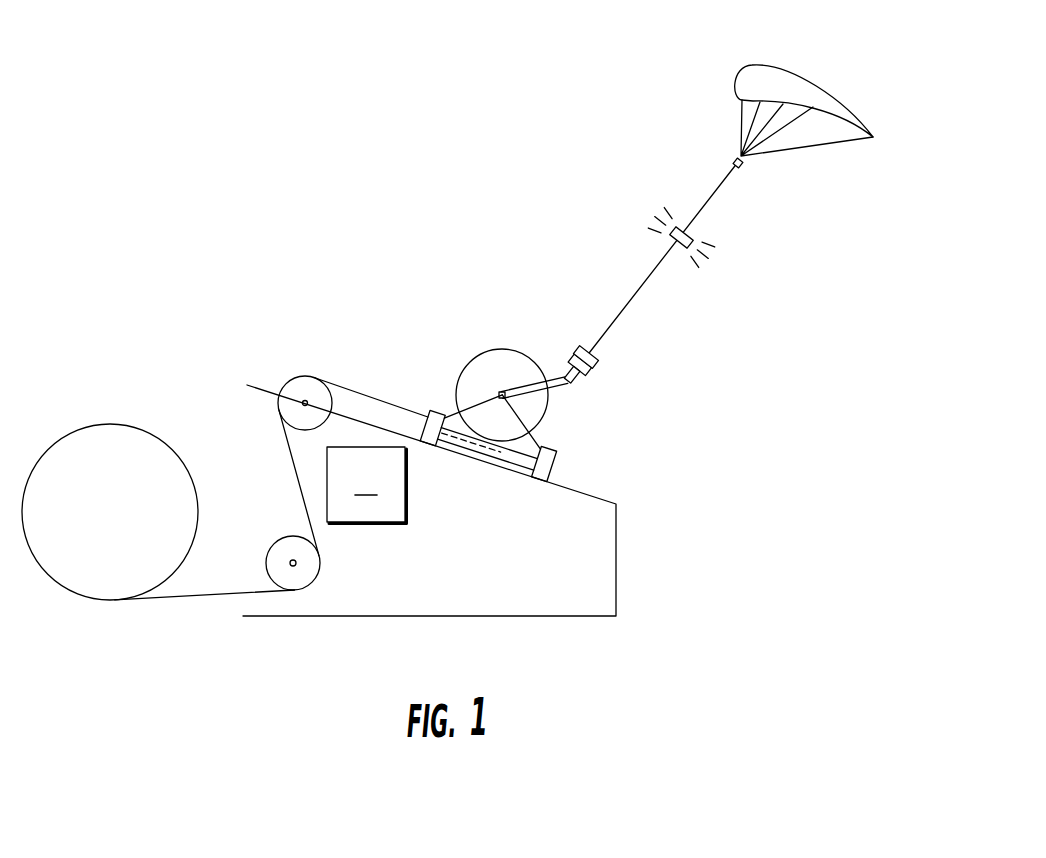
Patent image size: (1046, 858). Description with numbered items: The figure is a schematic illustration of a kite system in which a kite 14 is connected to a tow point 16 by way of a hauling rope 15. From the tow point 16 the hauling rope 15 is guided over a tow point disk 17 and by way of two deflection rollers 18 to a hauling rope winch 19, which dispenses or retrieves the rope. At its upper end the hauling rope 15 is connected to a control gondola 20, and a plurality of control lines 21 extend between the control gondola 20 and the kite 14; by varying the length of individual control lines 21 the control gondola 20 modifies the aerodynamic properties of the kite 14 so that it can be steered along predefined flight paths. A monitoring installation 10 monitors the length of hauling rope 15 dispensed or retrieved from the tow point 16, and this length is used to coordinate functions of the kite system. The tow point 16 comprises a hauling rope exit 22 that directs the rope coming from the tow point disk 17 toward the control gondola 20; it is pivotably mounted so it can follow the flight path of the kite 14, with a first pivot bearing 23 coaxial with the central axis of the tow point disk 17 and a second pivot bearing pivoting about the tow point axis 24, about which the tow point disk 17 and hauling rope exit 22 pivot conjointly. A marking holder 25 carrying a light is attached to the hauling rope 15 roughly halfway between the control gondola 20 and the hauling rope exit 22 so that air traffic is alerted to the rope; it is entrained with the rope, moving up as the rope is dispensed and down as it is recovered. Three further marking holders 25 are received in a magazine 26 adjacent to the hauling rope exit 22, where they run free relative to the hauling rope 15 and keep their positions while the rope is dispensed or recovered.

The monitoring installation 10 is at (367, 485).
The kite 14 is at (780, 63).
The hauling rope 15 is at (629, 298).
The tow point 16 is at (472, 306).
The tow point disk 17 is at (466, 366).
The deflection rollers 18 is at (302, 385).
The hauling rope winch 19 is at (101, 582).
The control gondola 20 is at (737, 157).
The control lines 21 is at (797, 153).
The hauling rope exit 22 is at (577, 387).
The first pivot bearing 23 is at (502, 398).
The tow point axis 24 is at (558, 468).
The marking holder 25 is at (694, 240).
The magazine 26 is at (600, 375).